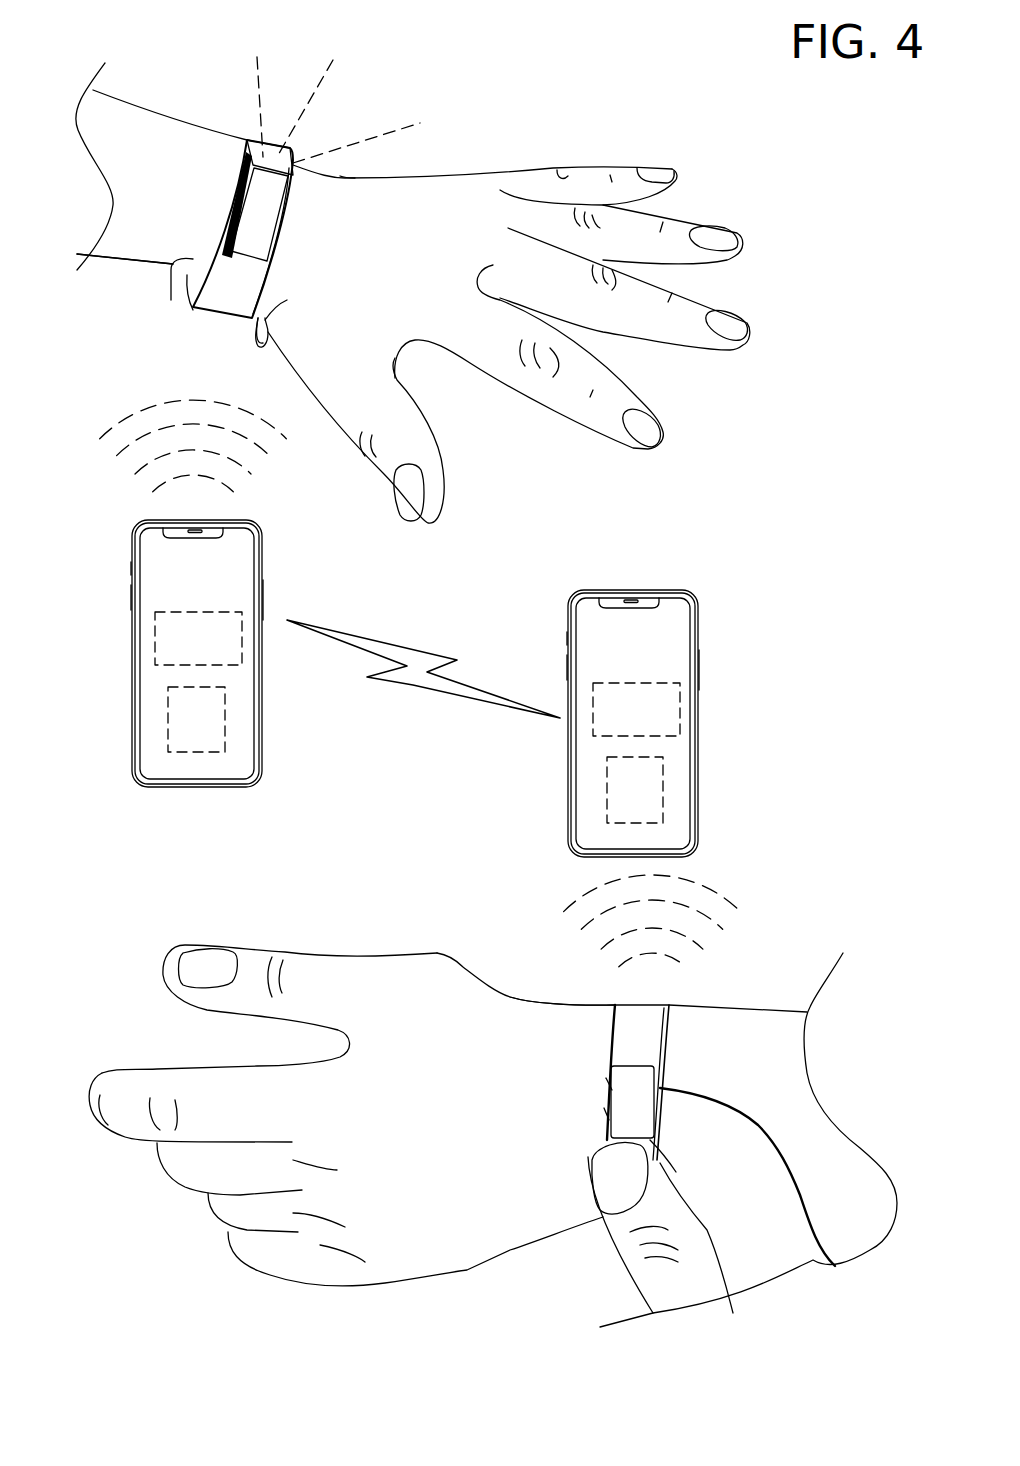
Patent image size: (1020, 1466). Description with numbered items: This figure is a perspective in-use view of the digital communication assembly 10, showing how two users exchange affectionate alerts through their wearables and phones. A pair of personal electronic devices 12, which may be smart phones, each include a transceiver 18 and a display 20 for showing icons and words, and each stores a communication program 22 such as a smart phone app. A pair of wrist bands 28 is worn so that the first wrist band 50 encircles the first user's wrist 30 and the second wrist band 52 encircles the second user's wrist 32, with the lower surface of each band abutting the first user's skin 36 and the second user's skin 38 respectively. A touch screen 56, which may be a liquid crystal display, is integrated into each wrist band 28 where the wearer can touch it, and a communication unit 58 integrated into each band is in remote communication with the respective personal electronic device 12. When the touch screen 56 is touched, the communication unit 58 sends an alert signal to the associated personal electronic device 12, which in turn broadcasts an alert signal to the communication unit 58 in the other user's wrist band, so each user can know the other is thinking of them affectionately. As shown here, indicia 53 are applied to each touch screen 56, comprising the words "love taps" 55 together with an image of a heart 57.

The digital communication assembly 10 is at (463, 97).
The personal electronic devices 12 is at (132, 558).
The transceiver 18 is at (167, 708).
The display 20 is at (178, 567).
The communication program 22 is at (233, 610).
The wrist bands 28 is at (237, 219).
The first user's wrist 30 is at (350, 165).
The second user's wrist 32 is at (593, 1240).
The first user's skin 36 is at (260, 317).
The second user's skin 38 is at (568, 1027).
The first wrist band 50 is at (171, 300).
The second wrist band 52 is at (615, 1005).
The indicia 53 is at (590, 1119).
The words "love taps" 55 is at (653, 1145).
The touch screens 56 is at (270, 157).
The image of a heart 57 is at (598, 1082).
The communication units 58 is at (242, 128).